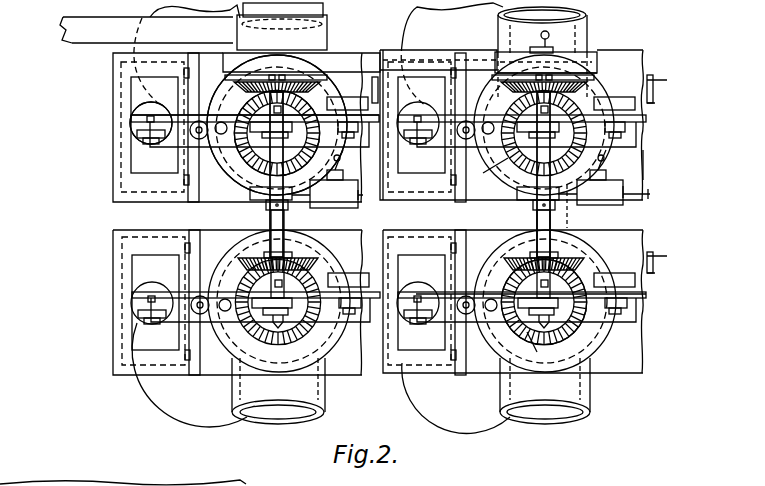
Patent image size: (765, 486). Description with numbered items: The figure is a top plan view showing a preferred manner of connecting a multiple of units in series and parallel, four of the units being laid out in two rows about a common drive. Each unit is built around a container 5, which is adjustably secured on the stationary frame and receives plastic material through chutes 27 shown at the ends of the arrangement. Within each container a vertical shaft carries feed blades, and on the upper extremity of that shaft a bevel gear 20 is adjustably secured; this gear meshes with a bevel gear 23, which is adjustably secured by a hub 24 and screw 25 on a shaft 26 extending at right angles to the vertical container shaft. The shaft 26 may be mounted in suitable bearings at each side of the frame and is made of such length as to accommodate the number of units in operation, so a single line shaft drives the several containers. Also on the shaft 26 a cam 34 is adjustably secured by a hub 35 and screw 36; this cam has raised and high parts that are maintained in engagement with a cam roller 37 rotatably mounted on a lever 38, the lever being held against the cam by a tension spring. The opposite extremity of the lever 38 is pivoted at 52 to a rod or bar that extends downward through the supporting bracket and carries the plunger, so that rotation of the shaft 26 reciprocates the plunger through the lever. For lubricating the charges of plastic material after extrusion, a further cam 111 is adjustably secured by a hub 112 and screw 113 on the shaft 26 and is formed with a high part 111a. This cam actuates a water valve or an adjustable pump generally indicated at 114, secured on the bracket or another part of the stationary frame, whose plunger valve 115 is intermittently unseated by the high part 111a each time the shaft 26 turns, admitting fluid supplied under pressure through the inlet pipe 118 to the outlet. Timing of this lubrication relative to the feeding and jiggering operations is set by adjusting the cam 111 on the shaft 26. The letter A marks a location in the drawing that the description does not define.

The container 5 is at (642, 170).
The bevel gear 20 is at (487, 173).
The bevel gear 23 is at (600, 76).
The hub 24 is at (598, 63).
The screw 25 is at (550, 46).
The shaft 26 is at (284, 220).
The chute 27 is at (590, 17).
The cam 34 is at (590, 302).
The hub 35 is at (266, 164).
The screw 36 is at (252, 155).
The cam roller 37 is at (568, 325).
The lever 38 is at (131, 114).
The pivot 52 is at (146, 136).
The cam 111 is at (531, 174).
The high part 111a is at (518, 197).
The hub 112 is at (535, 205).
The screw 113 is at (570, 213).
The pump 114 is at (471, 179).
The plunger valve 115 is at (590, 172).
The inlet pipe 118 is at (362, 198).
The axis A is at (410, 397).